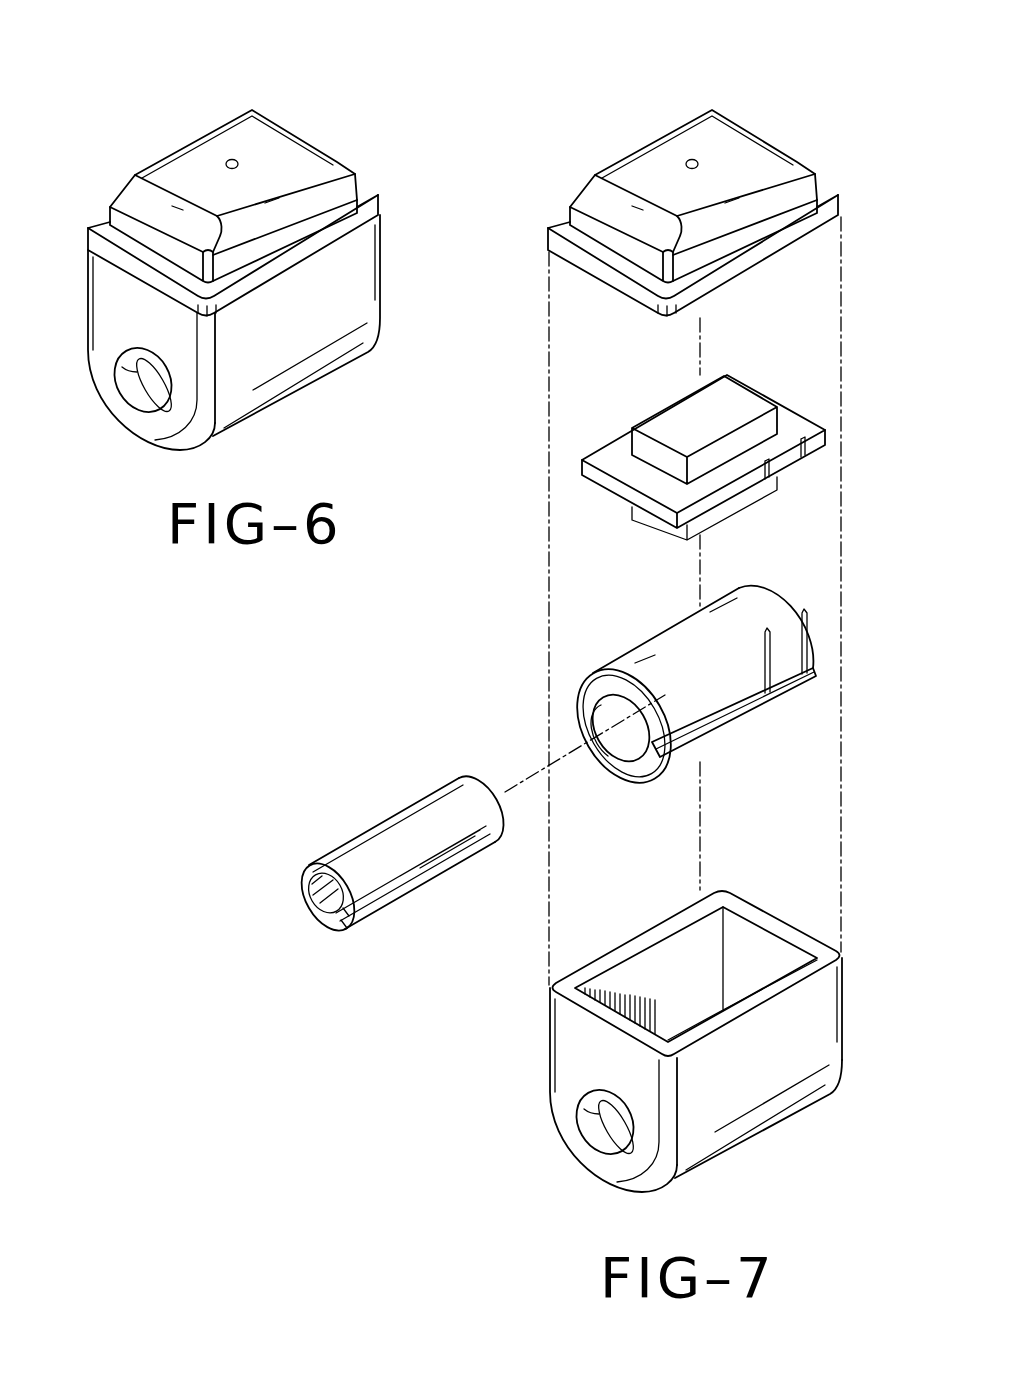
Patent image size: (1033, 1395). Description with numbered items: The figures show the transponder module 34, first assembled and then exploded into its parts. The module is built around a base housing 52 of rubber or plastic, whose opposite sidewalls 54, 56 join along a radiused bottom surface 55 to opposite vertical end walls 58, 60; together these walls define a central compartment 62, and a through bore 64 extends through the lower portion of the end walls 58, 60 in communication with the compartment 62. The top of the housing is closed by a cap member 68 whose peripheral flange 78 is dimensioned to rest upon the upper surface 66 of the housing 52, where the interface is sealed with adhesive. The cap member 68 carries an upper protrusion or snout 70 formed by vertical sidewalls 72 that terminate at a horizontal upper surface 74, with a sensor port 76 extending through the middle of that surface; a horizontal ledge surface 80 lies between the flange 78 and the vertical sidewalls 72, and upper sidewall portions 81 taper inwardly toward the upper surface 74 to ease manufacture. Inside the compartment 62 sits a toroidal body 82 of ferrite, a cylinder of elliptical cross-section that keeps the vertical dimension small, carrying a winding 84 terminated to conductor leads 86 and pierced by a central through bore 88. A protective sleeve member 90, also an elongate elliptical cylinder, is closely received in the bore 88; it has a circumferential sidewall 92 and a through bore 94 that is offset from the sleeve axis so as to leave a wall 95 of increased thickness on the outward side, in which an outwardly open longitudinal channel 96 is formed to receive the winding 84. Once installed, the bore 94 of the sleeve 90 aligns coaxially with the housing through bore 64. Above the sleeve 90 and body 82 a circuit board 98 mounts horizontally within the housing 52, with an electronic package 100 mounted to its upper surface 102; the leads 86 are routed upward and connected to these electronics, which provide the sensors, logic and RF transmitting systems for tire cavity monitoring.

In FIG. 6, the transponder module 34 is at (150, 460).
In FIG. 6, the base housing 52 is at (272, 426).
In FIG. 7, the base housing 52 is at (735, 1165).
In FIG. 7, the sidewall 54 is at (848, 1009).
In FIG. 7, the radiused bottom surface 55 is at (772, 1119).
In FIG. 7, the sidewall 56 is at (650, 977).
In FIG. 7, the vertical end wall 58 is at (757, 958).
In FIG. 7, the vertical end wall 60 is at (580, 1090).
In FIG. 7, the central compartment 62 is at (682, 968).
In FIG. 6, the through bore 64 is at (136, 395).
In FIG. 7, the through bore 64 is at (556, 1129).
In FIG. 7, the upper surface 66 is at (757, 912).
In FIG. 6, the cap member 68 is at (296, 97).
In FIG. 7, the cap member 68 is at (745, 100).
In FIG. 6, the upper protrusion 70 is at (356, 187).
In FIG. 7, the upper protrusion 70 is at (830, 159).
In FIG. 6, the vertical sidewall 72 is at (313, 213).
In FIG. 7, the vertical sidewall 72 is at (788, 240).
In FIG. 6, the horizontal upper surface 74 is at (245, 163).
In FIG. 7, the horizontal upper surface 74 is at (718, 150).
In FIG. 6, the sensor port 76 is at (226, 161).
In FIG. 7, the sensor port 76 is at (665, 118).
In FIG. 6, the flange 78 is at (132, 273).
In FIG. 7, the flange 78 is at (658, 255).
In FIG. 6, the horizontal ledge surface 80 is at (100, 225).
In FIG. 7, the horizontal ledge surface 80 is at (657, 237).
In FIG. 6, the upper sidewall portion 81 is at (143, 205).
In FIG. 7, the upper sidewall portion 81 is at (614, 179).
In FIG. 7, the toroidal body 82 is at (592, 649).
In FIG. 7, the winding 84 is at (740, 718).
In FIG. 7, the conductor leads 86 is at (808, 625).
In FIG. 7, the central through bore 88 is at (600, 718).
In FIG. 7, the protective sleeve member 90 is at (385, 800).
In FIG. 7, the circumferential sidewall 92 is at (365, 850).
In FIG. 7, the through bore 94 is at (300, 903).
In FIG. 7, the wall 95 is at (337, 918).
In FIG. 7, the longitudinal channel 96 is at (400, 890).
In FIG. 7, the circuit board 98 is at (594, 506).
In FIG. 7, the electronic package 100 is at (737, 410).
In FIG. 7, the upper surface 102 is at (615, 455).